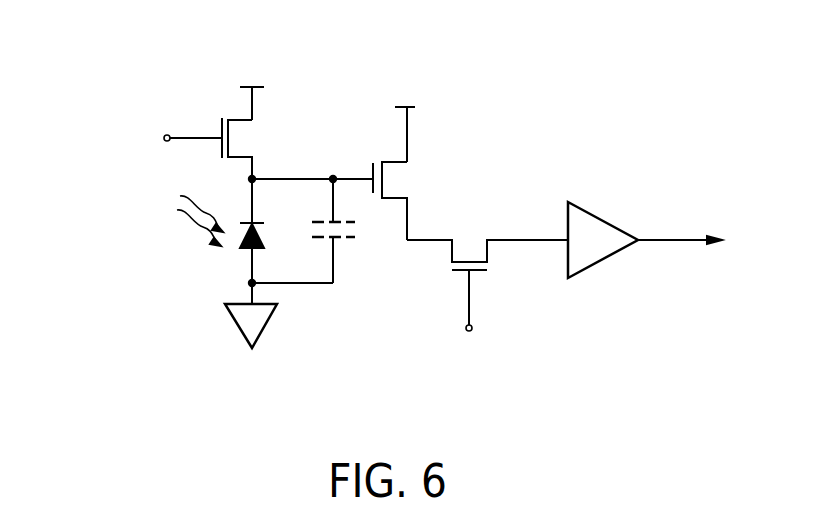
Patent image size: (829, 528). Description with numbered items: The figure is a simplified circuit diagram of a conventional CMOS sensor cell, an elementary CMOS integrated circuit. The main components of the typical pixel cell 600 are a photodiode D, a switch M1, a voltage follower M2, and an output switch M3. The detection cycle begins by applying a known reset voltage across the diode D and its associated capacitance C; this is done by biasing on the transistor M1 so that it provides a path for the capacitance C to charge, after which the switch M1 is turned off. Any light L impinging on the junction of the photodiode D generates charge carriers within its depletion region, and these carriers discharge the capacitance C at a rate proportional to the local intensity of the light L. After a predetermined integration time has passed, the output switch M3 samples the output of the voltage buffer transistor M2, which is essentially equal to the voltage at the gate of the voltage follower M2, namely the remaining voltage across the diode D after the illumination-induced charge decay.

The pixel cell 600 is at (140, 57).
The switch M1 is at (218, 148).
The voltage follower M2 is at (380, 201).
The output switch M3 is at (487, 273).
The photodiode D is at (261, 241).
The capacitance C is at (305, 231).
The light L is at (188, 216).